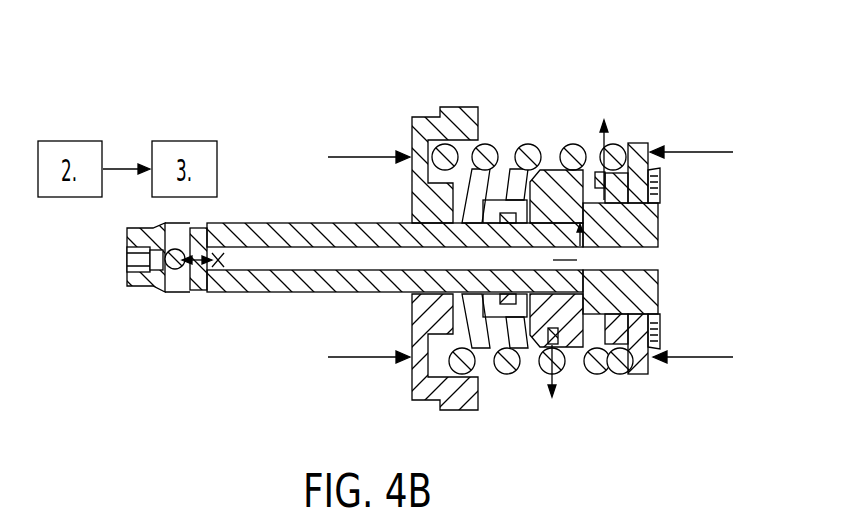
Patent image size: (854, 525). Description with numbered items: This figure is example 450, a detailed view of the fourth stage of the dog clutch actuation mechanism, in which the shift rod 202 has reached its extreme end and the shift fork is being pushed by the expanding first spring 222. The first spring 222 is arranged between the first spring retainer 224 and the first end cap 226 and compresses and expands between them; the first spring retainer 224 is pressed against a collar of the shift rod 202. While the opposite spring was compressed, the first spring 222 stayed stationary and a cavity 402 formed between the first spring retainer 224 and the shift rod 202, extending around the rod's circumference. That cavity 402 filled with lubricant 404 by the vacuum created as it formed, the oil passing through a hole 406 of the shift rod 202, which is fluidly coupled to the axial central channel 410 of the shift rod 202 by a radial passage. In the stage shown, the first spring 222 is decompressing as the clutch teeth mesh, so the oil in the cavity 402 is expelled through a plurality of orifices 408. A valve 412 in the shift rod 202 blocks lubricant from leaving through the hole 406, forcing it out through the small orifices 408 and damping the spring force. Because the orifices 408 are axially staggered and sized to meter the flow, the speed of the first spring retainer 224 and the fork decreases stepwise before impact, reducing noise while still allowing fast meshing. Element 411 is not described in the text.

The shift rod 202 is at (300, 223).
The lubricant 404 is at (233, 253).
The end cap 411 is at (127, 284).
The valve 412 is at (180, 268).
The first end cap 226 is at (416, 117).
The first spring 222 is at (522, 144).
The cavity 402 is at (573, 170).
The first spring retainer 224 is at (634, 142).
The orifices 408 is at (640, 176).
The central channel 410 is at (648, 258).
The hole 406 is at (573, 185).
The example 450 is at (692, 81).